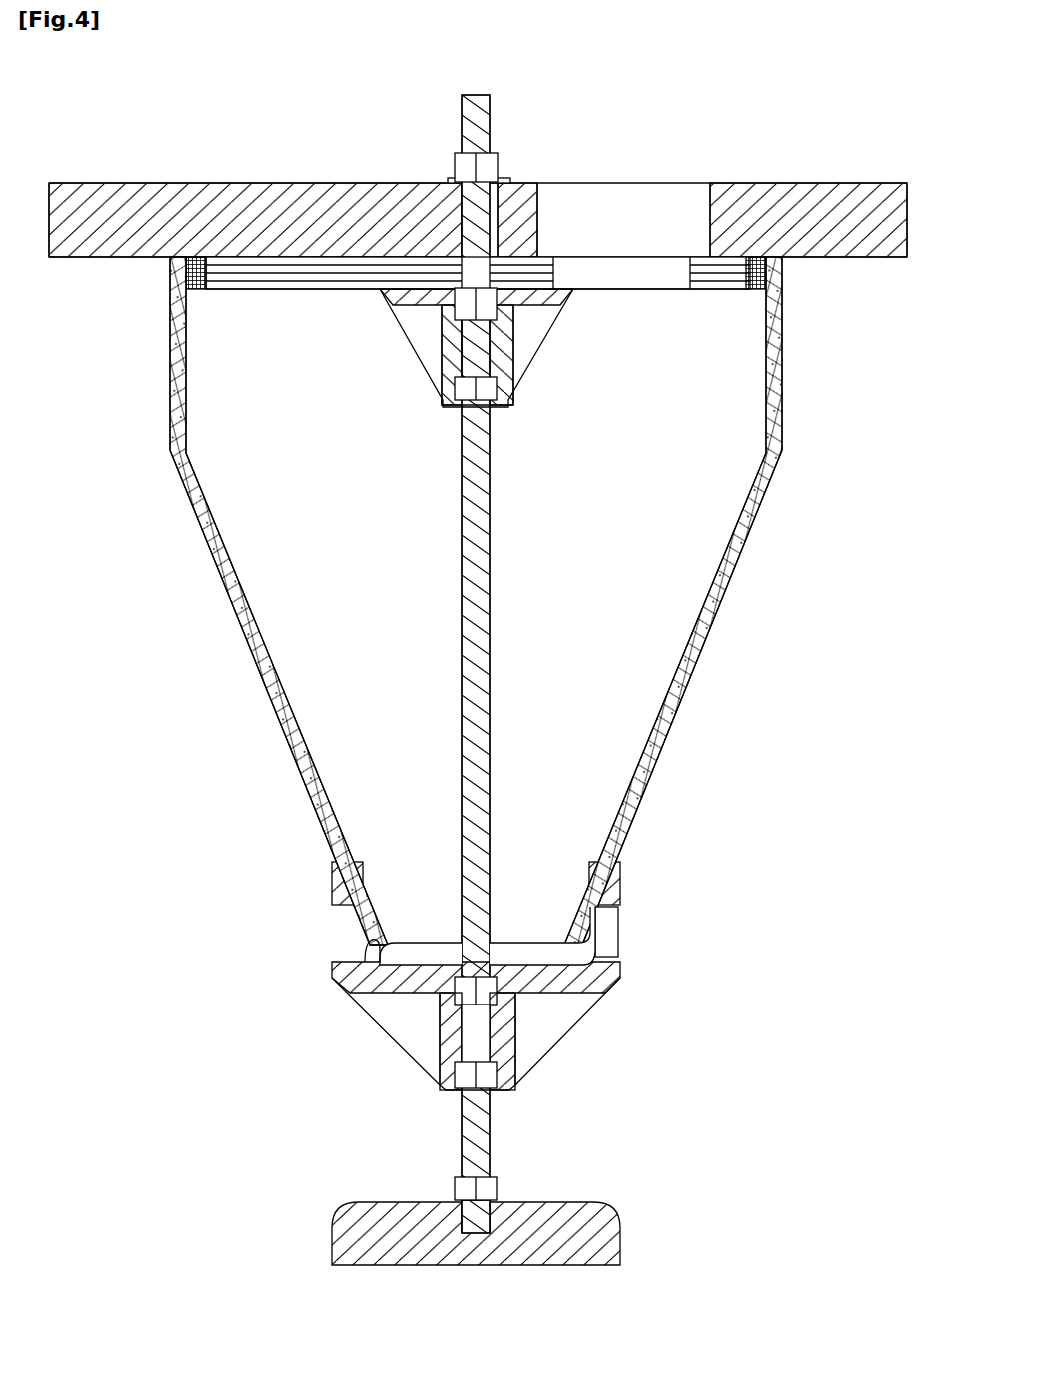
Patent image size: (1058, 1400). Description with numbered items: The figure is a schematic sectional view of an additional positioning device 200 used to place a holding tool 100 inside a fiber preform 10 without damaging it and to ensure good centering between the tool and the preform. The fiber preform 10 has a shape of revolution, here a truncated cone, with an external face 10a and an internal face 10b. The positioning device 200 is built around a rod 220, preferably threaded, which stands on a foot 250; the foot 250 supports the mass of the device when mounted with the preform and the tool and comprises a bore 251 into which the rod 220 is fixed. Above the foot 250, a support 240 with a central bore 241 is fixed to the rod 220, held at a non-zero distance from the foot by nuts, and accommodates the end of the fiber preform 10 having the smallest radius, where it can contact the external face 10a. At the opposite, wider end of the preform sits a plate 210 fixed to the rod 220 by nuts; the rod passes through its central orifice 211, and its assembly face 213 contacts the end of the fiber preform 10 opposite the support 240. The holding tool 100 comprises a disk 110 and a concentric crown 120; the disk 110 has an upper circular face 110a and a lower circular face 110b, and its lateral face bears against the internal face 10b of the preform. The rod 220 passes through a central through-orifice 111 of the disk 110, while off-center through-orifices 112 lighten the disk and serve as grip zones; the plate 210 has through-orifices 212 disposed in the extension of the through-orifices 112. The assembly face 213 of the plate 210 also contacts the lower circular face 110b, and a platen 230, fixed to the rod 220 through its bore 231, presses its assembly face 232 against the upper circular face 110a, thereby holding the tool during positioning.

The fiber preform 10 is at (490, 610).
The external face 10a is at (640, 797).
The internal face 10b is at (540, 873).
The holding tool 100 is at (432, 306).
The disk 110 is at (432, 306).
The upper circular face 110a is at (358, 292).
The lower circular face 110b is at (310, 258).
The through-orifice 111 is at (450, 275).
The through-orifice 112 is at (668, 270).
The crown 120 is at (327, 284).
The positioning device 200 is at (443, 1011).
The plate 210 is at (488, 215).
The central orifice 211 is at (517, 194).
The through-orifice 212 is at (627, 200).
The assembly face 213 is at (828, 259).
The rod 220 is at (490, 526).
The platen 230 is at (532, 329).
The bore 231 is at (497, 368).
The assembly face 232 is at (412, 291).
The support 240 is at (537, 1033).
The central bore 241 is at (458, 1040).
The foot 250 is at (509, 1236).
The bore 251 is at (468, 1232).